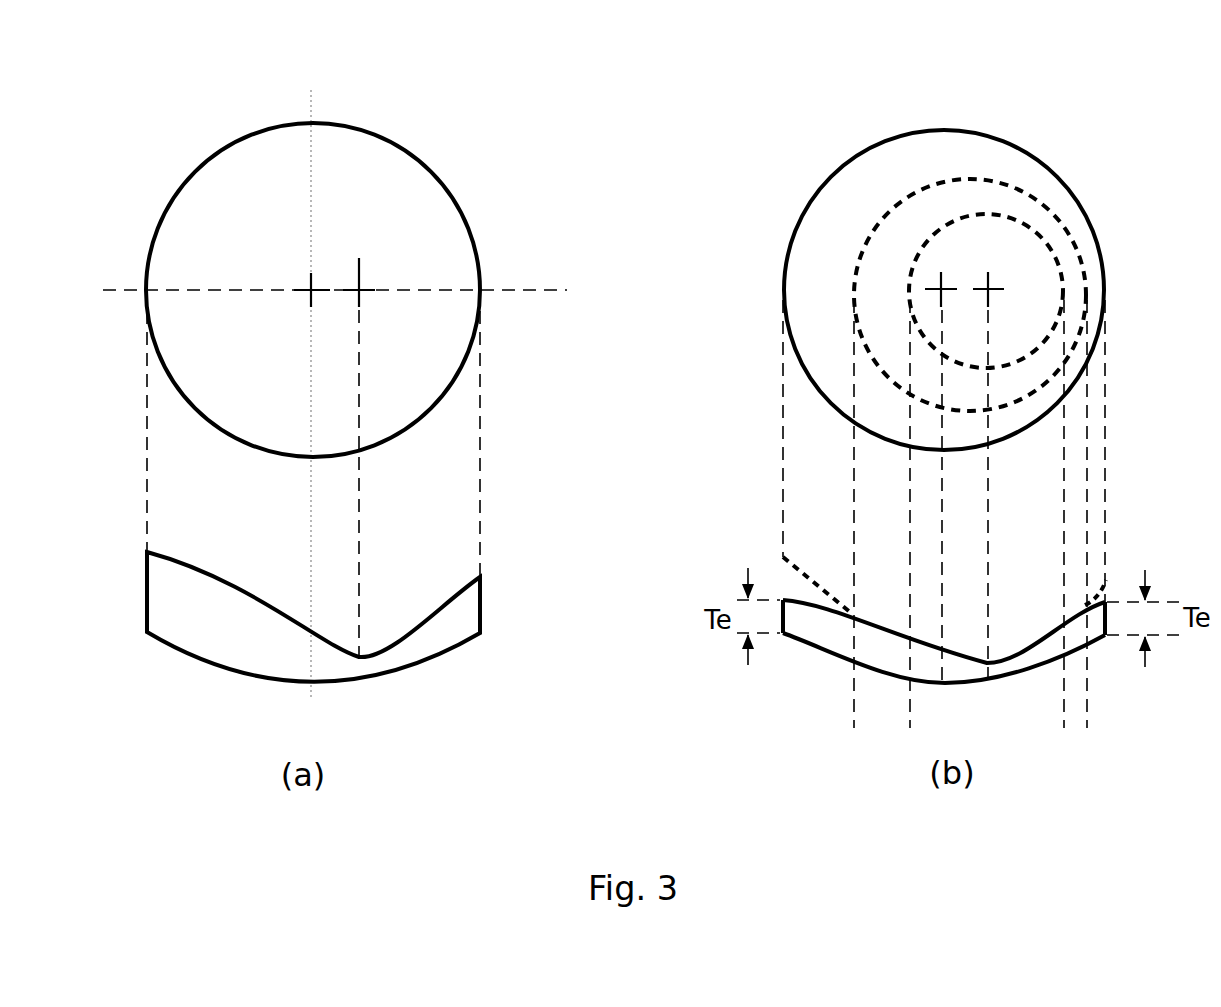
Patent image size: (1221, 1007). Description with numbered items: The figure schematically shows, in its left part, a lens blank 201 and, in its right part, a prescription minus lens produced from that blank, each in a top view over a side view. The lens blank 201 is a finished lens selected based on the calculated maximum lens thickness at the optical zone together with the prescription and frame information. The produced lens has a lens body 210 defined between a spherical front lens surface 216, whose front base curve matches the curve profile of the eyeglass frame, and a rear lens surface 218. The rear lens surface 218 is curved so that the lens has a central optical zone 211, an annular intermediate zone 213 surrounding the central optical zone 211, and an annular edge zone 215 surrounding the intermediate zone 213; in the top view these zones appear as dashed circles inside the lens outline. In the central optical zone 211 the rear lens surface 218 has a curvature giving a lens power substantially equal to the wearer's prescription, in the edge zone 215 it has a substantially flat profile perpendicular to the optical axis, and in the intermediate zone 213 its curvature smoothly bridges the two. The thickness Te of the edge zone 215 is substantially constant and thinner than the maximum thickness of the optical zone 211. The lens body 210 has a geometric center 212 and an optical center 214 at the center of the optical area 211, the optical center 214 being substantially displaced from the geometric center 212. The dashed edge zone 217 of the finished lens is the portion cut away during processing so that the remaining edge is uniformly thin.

The lens blank 201 is at (502, 596).
The lens body 210 is at (888, 690).
The central optical zone 211 is at (1036, 303).
The geometric center 212 is at (948, 280).
The annular intermediate zone 213 is at (1034, 370).
The optical center 214 is at (993, 280).
The annular edge zone 215 is at (818, 270).
The spherical front lens surface 216 is at (893, 683).
The edge zone of the finished lens 217 is at (798, 582).
The rear lens surface 218 is at (890, 630).